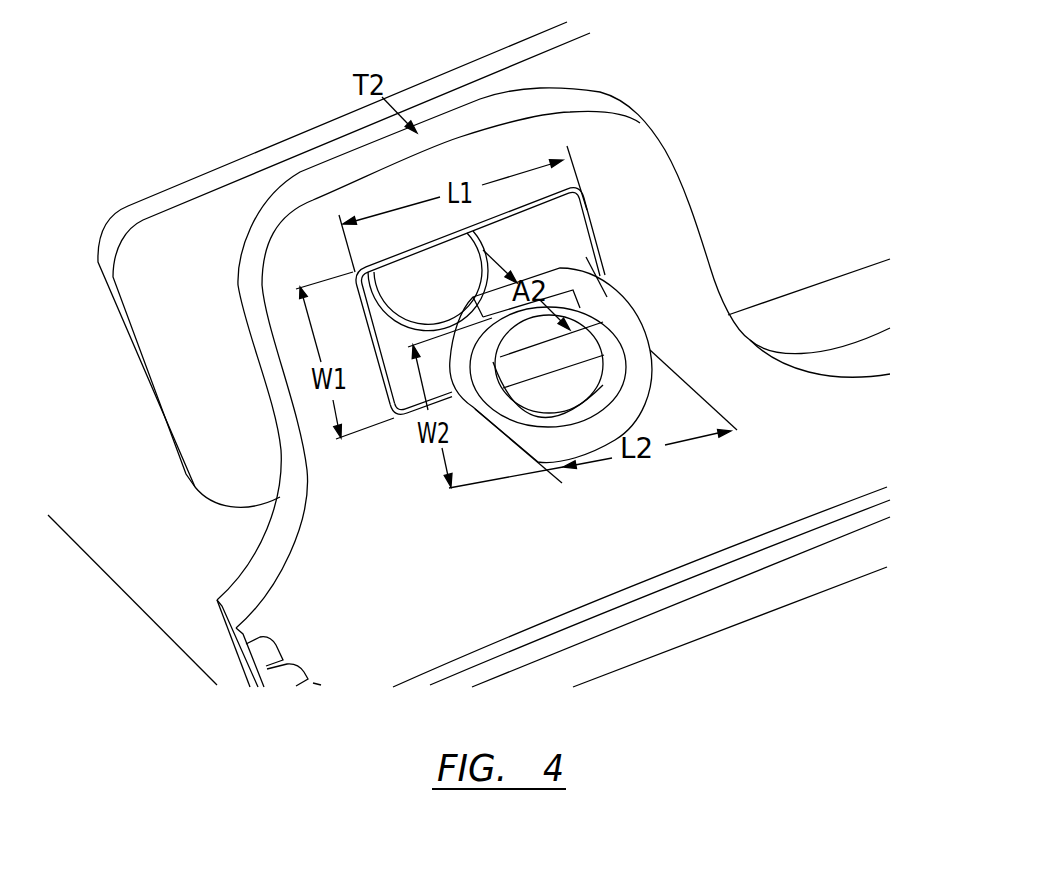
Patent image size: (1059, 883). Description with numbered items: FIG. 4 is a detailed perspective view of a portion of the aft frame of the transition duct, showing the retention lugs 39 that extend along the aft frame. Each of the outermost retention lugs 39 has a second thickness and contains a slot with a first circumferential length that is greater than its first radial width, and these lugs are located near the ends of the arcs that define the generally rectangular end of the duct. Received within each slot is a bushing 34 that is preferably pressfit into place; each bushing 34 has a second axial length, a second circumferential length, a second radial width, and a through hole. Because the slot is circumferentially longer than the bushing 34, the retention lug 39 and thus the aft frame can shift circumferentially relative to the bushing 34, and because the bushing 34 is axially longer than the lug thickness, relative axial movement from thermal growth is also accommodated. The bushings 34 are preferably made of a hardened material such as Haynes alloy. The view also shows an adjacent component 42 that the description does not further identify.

The cylindrical boss 34 is at (623, 327).
The raised rounded wall portion 39 is at (601, 101).
The circular recess 42 is at (439, 295).